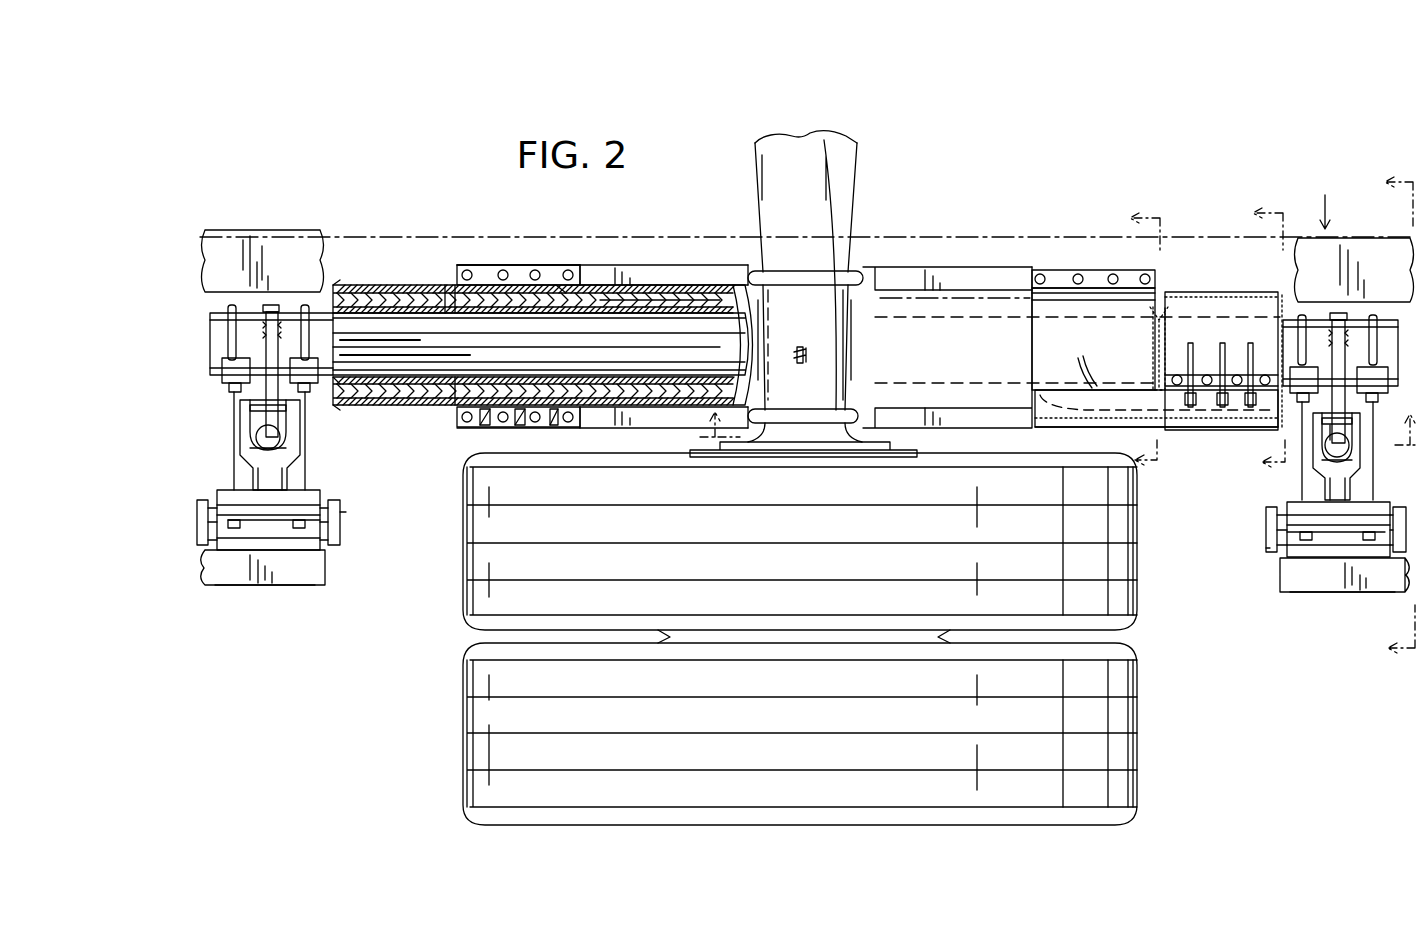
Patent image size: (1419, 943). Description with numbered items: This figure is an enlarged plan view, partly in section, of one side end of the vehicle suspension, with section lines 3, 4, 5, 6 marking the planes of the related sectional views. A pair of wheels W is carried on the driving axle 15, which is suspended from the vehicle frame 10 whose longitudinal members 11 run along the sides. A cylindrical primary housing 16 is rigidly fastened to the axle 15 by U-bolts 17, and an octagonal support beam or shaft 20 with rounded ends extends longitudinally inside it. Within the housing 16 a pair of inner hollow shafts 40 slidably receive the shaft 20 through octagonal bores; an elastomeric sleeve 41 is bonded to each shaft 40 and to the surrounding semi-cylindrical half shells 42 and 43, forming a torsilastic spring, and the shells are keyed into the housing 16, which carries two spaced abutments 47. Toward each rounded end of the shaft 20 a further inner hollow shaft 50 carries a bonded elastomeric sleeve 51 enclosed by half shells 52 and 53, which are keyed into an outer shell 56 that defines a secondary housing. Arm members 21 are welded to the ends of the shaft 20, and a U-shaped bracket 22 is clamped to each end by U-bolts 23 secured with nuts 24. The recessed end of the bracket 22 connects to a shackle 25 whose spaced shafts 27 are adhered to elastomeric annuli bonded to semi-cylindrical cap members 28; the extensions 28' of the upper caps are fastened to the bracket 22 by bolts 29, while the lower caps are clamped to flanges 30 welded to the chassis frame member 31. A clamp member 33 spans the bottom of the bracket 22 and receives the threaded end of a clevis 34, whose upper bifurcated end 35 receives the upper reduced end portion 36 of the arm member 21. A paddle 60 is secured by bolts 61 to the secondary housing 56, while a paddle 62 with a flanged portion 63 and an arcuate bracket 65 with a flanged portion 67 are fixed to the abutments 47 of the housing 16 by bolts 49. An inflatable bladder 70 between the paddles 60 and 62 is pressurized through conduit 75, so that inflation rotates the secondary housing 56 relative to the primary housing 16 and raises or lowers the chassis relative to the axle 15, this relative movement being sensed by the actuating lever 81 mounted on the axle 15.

The vehicle frame 10 is at (1311, 196).
The longitudinal member 11 is at (250, 240).
The driving axle 15 is at (832, 170).
The cylindrical primary housing 16 is at (940, 305).
The U-bolt 17 is at (822, 272).
The support beam or shaft 20 is at (418, 330).
The arm member 21 is at (271, 305).
The U-shaped bracket 22 is at (295, 480).
The U-bolt 23 is at (305, 305).
The nut 24 is at (230, 385).
The shackle 25 is at (356, 517).
The spaced shaft 27 is at (332, 510).
The semi-cylindrical cap member 28 is at (803, 566).
The extension 28' is at (806, 569).
The bolt 29 is at (300, 533).
The flange 30 is at (228, 548).
The chassis frame member 31 is at (240, 578).
The clamp member 33 is at (255, 450).
The clevis 34 is at (272, 437).
The upper bifurcated end 35 is at (255, 413).
The upper reduced end portion 36 is at (1322, 420).
The inner hollow shaft 40 is at (692, 313).
The elastomeric sleeve 41 is at (676, 300).
The semi-cylindrical half shell 42 is at (668, 400).
The semi-cylindrical half shell 43 is at (645, 298).
The spaced abutment 47 is at (632, 278).
The bolt 49 is at (503, 272).
The inner hollow shaft 50 is at (415, 398).
The elastomeric sleeve 51 is at (440, 297).
The semi-cylindrical half shell 52 is at (385, 400).
The semi-cylindrical half shell 53 is at (400, 295).
The outer shell 56 is at (365, 290).
The paddle 60 is at (1035, 390).
The bolt 61 is at (1213, 375).
The paddle 62 is at (1040, 425).
The flanged portion 63 is at (527, 425).
The arcuate bracket 65 is at (556, 285).
The flanged portion 67 is at (550, 268).
The inflatable bladder 70 is at (1085, 425).
The conduit 75 is at (1085, 365).
The actuating lever 81 is at (800, 355).
The wheel W is at (1134, 672).
The section line 3 is at (1046, 448).
The section line 4 is at (1390, 411).
The section line 5 is at (1258, 337).
The section line 6 is at (1147, 340).